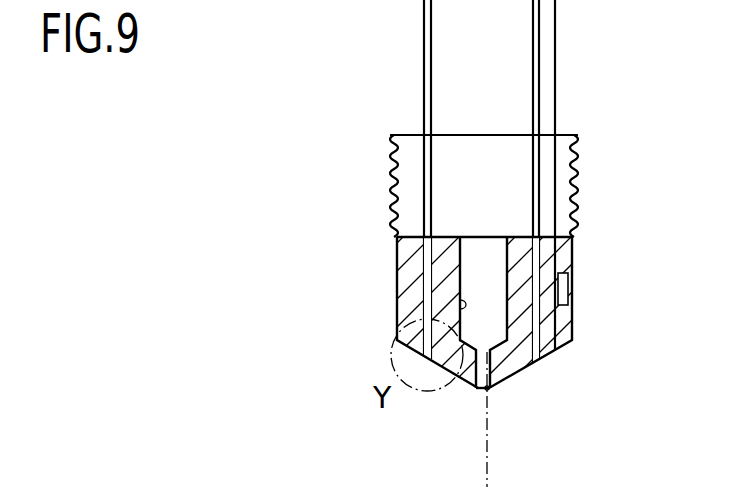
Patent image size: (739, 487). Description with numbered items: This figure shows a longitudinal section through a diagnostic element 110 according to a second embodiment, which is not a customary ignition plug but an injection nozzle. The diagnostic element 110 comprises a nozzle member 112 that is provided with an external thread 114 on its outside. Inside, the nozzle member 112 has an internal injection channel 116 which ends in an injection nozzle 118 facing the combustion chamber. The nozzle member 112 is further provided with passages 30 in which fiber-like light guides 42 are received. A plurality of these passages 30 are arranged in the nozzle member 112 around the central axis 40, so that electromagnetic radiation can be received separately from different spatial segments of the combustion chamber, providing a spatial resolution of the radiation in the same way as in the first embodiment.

The fiber-like light guide 42 is at (424, 72).
The diagnostic element 110 is at (376, 171).
The nozzle member 112 is at (413, 253).
The external thread 114 is at (578, 190).
The passage 30 is at (407, 280).
The internal injection channel 116 is at (462, 305).
The injection nozzle 118 is at (490, 390).
The central axis 40 is at (486, 462).